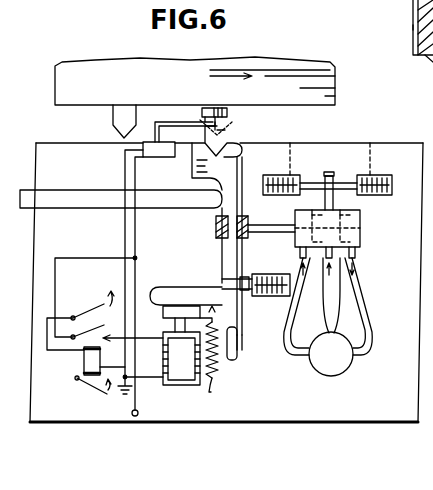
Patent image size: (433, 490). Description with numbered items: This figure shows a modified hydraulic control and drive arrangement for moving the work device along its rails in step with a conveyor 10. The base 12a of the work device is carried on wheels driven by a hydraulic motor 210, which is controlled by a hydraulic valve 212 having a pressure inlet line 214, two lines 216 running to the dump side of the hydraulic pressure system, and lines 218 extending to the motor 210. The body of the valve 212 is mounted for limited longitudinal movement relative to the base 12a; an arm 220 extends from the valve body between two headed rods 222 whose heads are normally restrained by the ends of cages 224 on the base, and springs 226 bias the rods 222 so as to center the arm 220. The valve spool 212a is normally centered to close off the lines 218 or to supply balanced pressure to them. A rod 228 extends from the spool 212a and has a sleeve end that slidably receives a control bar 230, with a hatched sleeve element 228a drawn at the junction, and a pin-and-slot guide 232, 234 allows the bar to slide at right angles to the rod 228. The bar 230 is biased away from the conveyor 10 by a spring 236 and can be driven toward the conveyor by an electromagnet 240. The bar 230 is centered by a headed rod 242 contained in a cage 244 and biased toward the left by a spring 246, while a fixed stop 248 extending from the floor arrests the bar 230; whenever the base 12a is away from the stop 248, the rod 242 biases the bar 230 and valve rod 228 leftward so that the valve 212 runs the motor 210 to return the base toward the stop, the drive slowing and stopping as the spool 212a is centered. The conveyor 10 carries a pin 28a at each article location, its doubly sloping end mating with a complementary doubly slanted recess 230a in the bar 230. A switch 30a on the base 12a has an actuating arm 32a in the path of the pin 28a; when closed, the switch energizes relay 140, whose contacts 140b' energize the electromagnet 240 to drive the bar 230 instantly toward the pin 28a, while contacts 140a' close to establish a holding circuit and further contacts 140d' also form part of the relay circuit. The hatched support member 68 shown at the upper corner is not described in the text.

The conveyor 10 is at (110, 70).
The pin 28a is at (113, 112).
The actuating arm 32a is at (232, 110).
The hatched support 68 is at (427, 58).
The base 12a is at (188, 432).
The switch 30a is at (157, 150).
The fixed stop 248 is at (75, 198).
The doubly slanted recess 230a is at (240, 152).
The seal 228a is at (216, 228).
The rod 228 is at (276, 230).
The spring 246 is at (268, 296).
The springs 226 is at (329, 151).
The cages 224 is at (298, 175).
The rods 222 is at (333, 180).
The arm 220 is at (335, 197).
The hydraulic valve 212 is at (361, 243).
The spool 212a is at (362, 230).
The lines 216 is at (303, 258).
The pressure inlet line 214 is at (333, 282).
The lines 218 is at (293, 360).
The hydraulic motor 210 is at (345, 368).
The rod 242 is at (240, 283).
The control bar 230 is at (220, 287).
The cage 244 is at (252, 283).
The pin 232 is at (237, 335).
The slot 234 is at (232, 360).
The spring 236 is at (215, 388).
The electromagnet 240 is at (181, 345).
The relay 140 is at (84, 358).
The relay contacts 140a' is at (87, 303).
The relay contacts 140b' is at (125, 313).
The relay contact 140d' is at (90, 397).